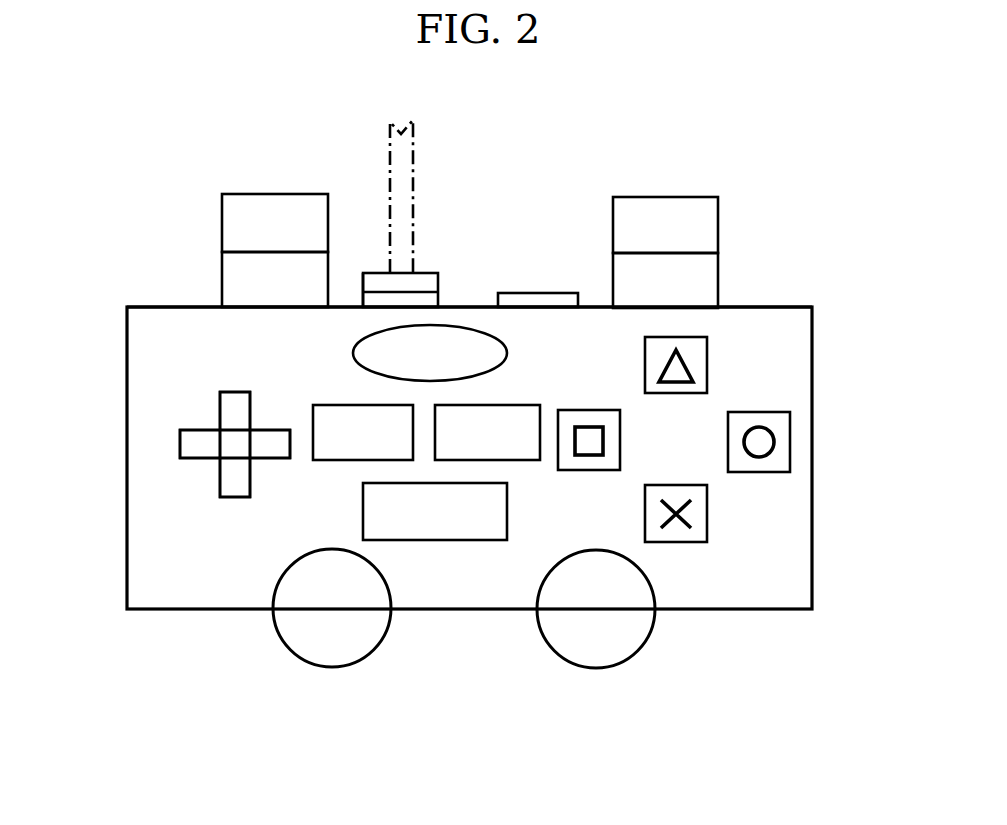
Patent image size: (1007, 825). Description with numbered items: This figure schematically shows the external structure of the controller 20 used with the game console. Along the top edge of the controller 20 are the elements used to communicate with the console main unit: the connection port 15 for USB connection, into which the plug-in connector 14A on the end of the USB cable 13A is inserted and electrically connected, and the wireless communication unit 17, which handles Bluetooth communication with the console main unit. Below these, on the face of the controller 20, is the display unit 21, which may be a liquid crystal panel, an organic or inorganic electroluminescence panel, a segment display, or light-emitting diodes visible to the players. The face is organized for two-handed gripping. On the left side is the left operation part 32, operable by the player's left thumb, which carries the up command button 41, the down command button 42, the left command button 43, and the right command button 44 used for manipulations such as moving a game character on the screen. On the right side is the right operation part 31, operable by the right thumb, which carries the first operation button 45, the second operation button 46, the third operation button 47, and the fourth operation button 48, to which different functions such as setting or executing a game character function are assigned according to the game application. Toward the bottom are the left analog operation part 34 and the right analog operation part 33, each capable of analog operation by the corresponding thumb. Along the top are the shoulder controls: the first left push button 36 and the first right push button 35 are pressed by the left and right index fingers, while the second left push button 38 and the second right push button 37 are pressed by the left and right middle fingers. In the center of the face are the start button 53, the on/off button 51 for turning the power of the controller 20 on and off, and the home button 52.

The USB cable 13A is at (417, 178).
The plug-in connector 14A is at (438, 277).
The connection port 15 is at (362, 300).
The wireless communication unit 17 is at (518, 293).
The controller 20 is at (812, 498).
The display unit 21 is at (380, 358).
The right operation part 31 is at (752, 500).
The left operation part 32 is at (167, 463).
The right analog operation part 33 is at (605, 652).
The left analog operation part 34 is at (332, 655).
The first right push button 35 is at (705, 281).
The first left push button 36 is at (240, 286).
The second right push button 37 is at (706, 228).
The second left push button 38 is at (240, 230).
The up command button 41 is at (230, 416).
The down command button 42 is at (230, 478).
The left command button 43 is at (190, 450).
The right command button 44 is at (262, 452).
The first operation button 45 is at (782, 444).
The second operation button 46 is at (677, 535).
The third operation button 47 is at (615, 437).
The fourth operation button 48 is at (693, 352).
The on/off button 51 is at (508, 450).
The home button 52 is at (468, 533).
The start button 53 is at (346, 447).